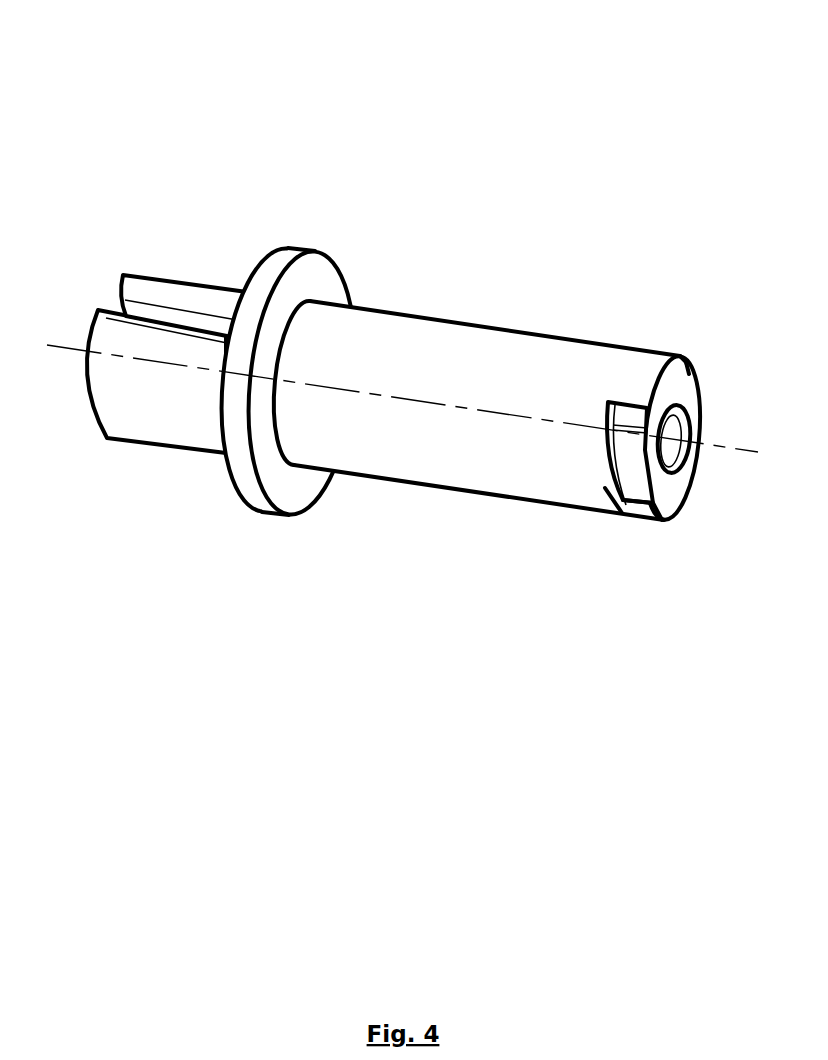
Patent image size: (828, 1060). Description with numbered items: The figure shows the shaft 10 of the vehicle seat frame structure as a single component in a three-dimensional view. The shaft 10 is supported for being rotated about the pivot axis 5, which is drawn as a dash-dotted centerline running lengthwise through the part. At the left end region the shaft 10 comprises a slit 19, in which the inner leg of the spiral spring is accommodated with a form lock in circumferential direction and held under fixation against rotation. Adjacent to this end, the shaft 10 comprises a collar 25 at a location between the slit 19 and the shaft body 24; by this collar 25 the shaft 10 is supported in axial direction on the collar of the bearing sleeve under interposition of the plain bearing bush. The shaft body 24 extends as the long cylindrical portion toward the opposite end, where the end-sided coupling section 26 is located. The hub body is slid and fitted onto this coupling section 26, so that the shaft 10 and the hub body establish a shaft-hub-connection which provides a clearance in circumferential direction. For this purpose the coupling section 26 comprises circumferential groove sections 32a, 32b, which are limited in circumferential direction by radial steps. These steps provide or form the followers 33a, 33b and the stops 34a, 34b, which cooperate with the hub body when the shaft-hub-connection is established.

The shaft 10 is at (477, 336).
The slit 19 is at (208, 302).
The collar 25 is at (288, 263).
The shaft body 24 is at (420, 457).
The pivot axis 5 is at (723, 447).
The circumferential groove section 32a is at (604, 462).
The circumferential groove section 32b is at (702, 379).
The follower 33a is at (648, 510).
The follower 33b is at (690, 365).
The stop 34a is at (623, 417).
The stop 34b is at (700, 462).
The coupling section 26 is at (631, 536).